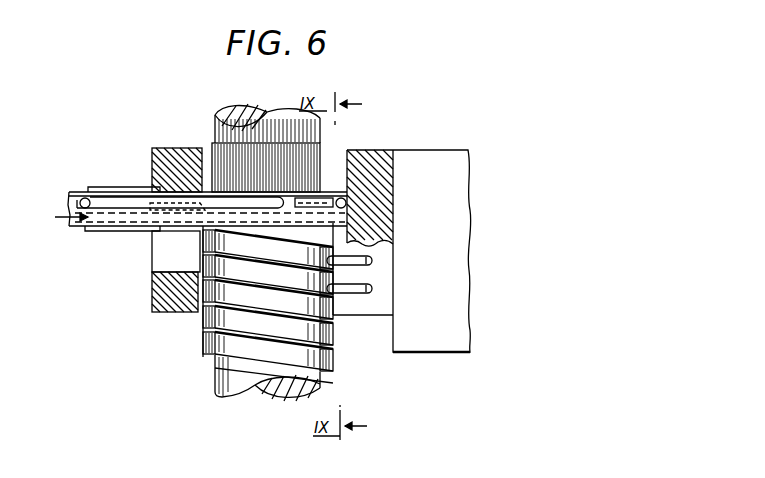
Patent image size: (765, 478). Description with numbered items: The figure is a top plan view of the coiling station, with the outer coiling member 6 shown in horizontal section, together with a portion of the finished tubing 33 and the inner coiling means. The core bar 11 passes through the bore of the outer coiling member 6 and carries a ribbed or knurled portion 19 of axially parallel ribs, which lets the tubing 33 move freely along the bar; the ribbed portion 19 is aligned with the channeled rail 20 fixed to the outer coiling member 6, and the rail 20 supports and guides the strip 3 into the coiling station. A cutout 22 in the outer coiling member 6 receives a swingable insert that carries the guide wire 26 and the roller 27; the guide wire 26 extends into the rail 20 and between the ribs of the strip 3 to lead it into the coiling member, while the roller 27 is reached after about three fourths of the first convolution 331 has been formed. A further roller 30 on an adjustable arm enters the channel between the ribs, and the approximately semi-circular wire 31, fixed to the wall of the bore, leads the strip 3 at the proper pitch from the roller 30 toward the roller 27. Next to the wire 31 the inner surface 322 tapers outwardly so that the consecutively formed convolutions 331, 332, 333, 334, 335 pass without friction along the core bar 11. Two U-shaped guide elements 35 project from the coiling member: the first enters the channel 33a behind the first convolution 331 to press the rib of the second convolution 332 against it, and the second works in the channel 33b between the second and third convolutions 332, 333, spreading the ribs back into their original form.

The strip 3 is at (95, 217).
The outer coiling member 6 is at (386, 169).
The core bar 11 is at (243, 128).
The ribbed portion 19 is at (310, 162).
The channeled rail 20 is at (120, 230).
The cutout 22 is at (158, 240).
The guide wire 26 is at (183, 202).
The roller 27 is at (155, 206).
The roller 30 is at (335, 199).
The semi-circular wire 31 is at (284, 203).
The tubing 33 is at (197, 355).
The channel 33a is at (305, 253).
The first convolution 331 is at (200, 232).
The channel 33b is at (200, 280).
The second convolution 332 is at (336, 272).
The third convolution 333 is at (334, 306).
The fourth convolution 334 is at (337, 332).
The fifth convolution 335 is at (337, 357).
The inner surface 322 is at (186, 311).
The guide elements 35 is at (372, 259).